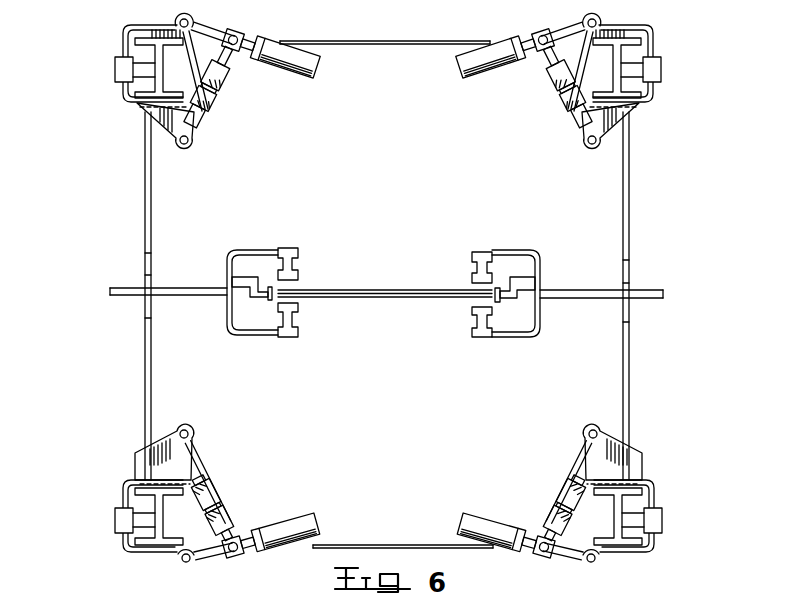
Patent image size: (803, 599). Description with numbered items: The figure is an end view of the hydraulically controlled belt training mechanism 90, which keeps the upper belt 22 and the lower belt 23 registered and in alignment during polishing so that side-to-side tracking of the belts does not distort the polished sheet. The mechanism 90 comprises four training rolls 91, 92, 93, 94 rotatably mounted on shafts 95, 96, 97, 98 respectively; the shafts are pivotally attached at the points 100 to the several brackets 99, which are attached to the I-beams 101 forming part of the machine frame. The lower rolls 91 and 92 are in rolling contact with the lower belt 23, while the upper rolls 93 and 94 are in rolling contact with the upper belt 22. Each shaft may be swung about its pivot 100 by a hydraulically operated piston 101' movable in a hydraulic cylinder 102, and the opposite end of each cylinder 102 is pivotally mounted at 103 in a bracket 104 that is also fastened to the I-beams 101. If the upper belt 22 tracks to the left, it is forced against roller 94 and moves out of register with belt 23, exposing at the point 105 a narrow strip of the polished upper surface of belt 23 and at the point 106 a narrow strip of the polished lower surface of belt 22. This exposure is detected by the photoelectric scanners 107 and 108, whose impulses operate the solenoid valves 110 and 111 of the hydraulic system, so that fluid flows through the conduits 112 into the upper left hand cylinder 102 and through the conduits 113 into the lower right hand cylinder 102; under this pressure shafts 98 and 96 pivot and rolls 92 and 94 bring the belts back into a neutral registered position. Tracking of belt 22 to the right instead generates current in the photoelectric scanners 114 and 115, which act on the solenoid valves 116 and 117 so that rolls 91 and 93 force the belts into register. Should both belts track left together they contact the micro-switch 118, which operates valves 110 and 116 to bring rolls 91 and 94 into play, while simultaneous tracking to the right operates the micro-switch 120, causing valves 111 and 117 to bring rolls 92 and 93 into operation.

The upper belt 22 is at (391, 41).
The lower belt 23 is at (436, 298).
The belt training mechanism 90 is at (683, 398).
The training roll 91 is at (302, 516).
The training roll 92 is at (472, 516).
The training roll 93 is at (462, 61).
The training roll 94 is at (314, 63).
The shaft 95 is at (250, 532).
The shaft 96 is at (530, 536).
The shaft 97 is at (530, 50).
The shaft 98 is at (243, 49).
The bracket 99 is at (174, 24).
The pivot point 100 is at (193, 22).
The I-beam 101 is at (388, 291).
The hydraulically operated piston 101' is at (389, 293).
The hydraulic cylinder 102 is at (218, 97).
The pivotal mounting 103 is at (183, 147).
The bracket 104 is at (160, 117).
The exposure point 105 is at (495, 284).
The exposure point 106 is at (270, 303).
The photoelectric scanner 107 is at (477, 278).
The photoelectric scanner 108 is at (298, 309).
The solenoid valve 110 is at (118, 73).
The solenoid valve 111 is at (667, 522).
The conduits 112 is at (121, 43).
The conduits 113 is at (660, 493).
The photoelectric scanner 114 is at (475, 323).
The photoelectric scanner 115 is at (298, 264).
The solenoid valve 116 is at (120, 523).
The solenoid valve 117 is at (655, 71).
The micro-switch 118 is at (268, 285).
The micro-switch 120 is at (500, 297).